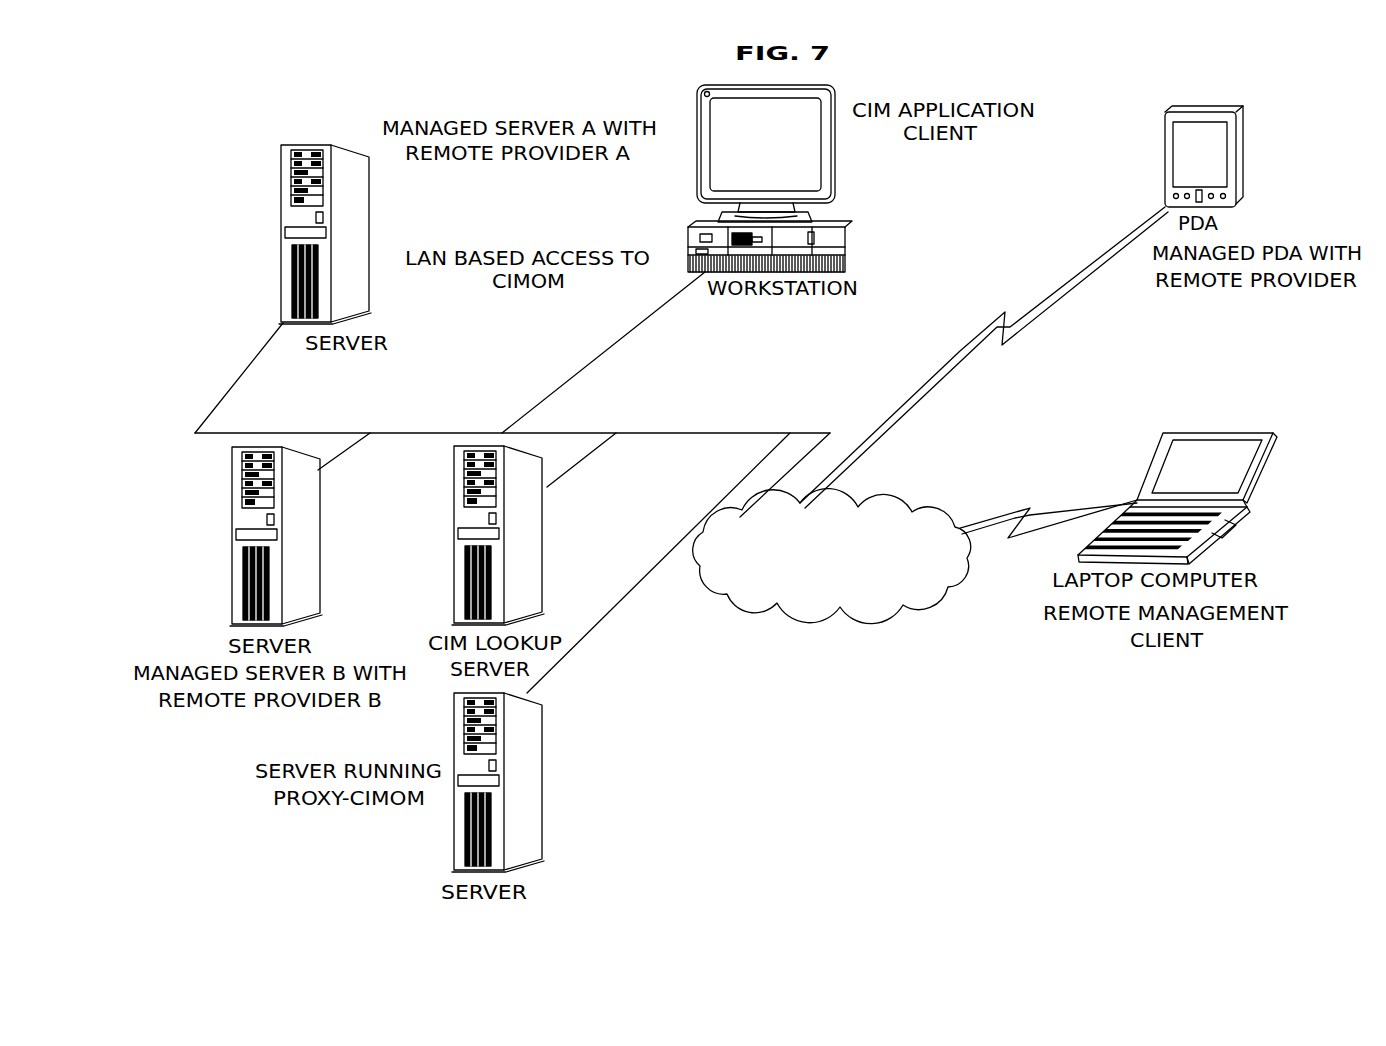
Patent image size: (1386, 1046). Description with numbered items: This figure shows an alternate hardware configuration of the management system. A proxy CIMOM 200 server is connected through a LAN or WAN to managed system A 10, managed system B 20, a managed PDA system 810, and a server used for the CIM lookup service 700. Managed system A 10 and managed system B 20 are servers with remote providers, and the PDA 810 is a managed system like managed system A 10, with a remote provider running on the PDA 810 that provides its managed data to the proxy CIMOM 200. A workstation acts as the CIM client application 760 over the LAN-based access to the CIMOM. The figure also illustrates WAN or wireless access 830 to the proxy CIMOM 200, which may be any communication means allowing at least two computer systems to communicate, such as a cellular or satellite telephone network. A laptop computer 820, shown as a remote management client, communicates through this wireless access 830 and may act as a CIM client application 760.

The managed system A 10 is at (371, 190).
The managed system B 20 is at (322, 488).
The server used for the CIM lookup service 700 is at (545, 524).
The proxy CIMOM server 200 is at (545, 786).
The CIM client application 760 is at (836, 178).
The managed PDA system 810 is at (1164, 149).
The laptop computer remote management client 820 is at (1167, 432).
The WAN or wireless access 830 is at (826, 608).